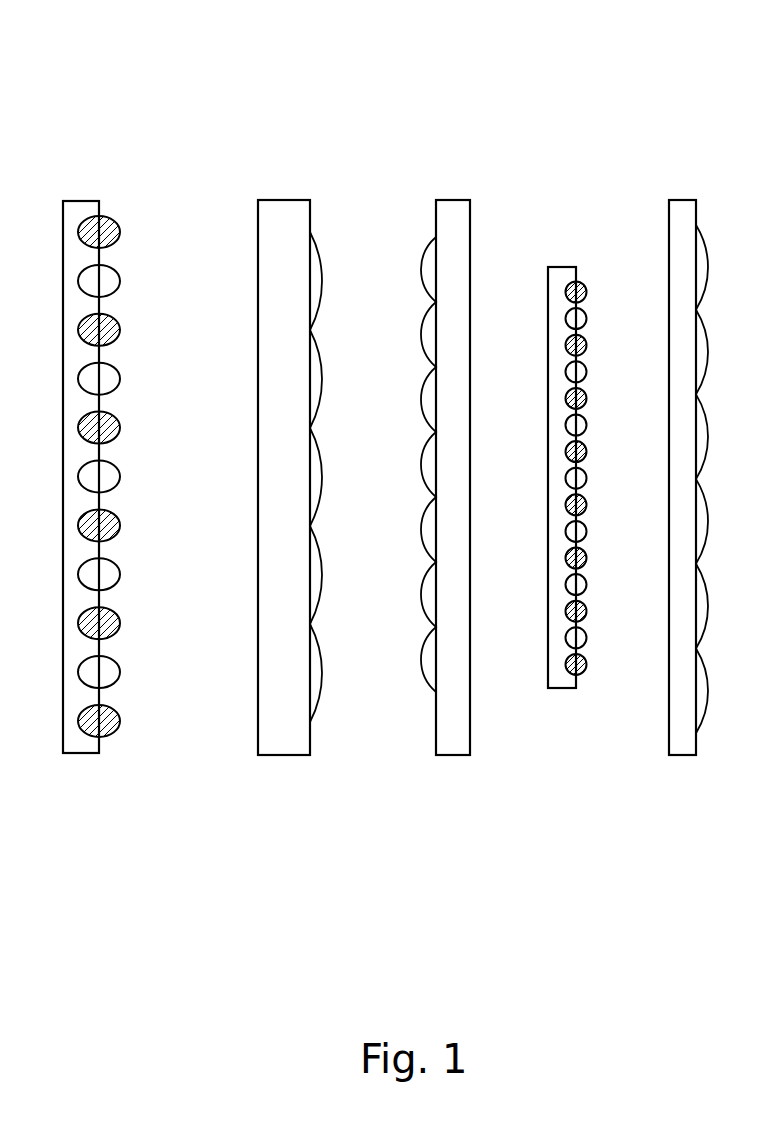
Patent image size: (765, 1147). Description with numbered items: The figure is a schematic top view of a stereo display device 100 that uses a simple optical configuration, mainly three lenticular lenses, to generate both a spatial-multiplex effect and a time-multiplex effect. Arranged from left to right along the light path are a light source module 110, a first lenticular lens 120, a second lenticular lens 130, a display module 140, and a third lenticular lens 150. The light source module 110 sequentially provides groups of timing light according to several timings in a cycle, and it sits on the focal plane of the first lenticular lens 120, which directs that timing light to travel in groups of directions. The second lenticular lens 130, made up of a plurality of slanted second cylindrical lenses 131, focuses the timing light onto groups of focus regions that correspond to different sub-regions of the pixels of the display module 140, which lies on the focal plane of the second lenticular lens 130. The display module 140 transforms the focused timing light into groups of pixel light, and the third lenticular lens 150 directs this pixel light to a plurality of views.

The stereo display device 100 is at (84, 47).
The light source module 110 is at (79, 201).
The first lenticular lens 120 is at (282, 215).
The second lenticular lens 130 is at (450, 215).
The second cylindrical lens 131 is at (428, 255).
The display module 140 is at (562, 266).
The third lenticular lens 150 is at (680, 213).